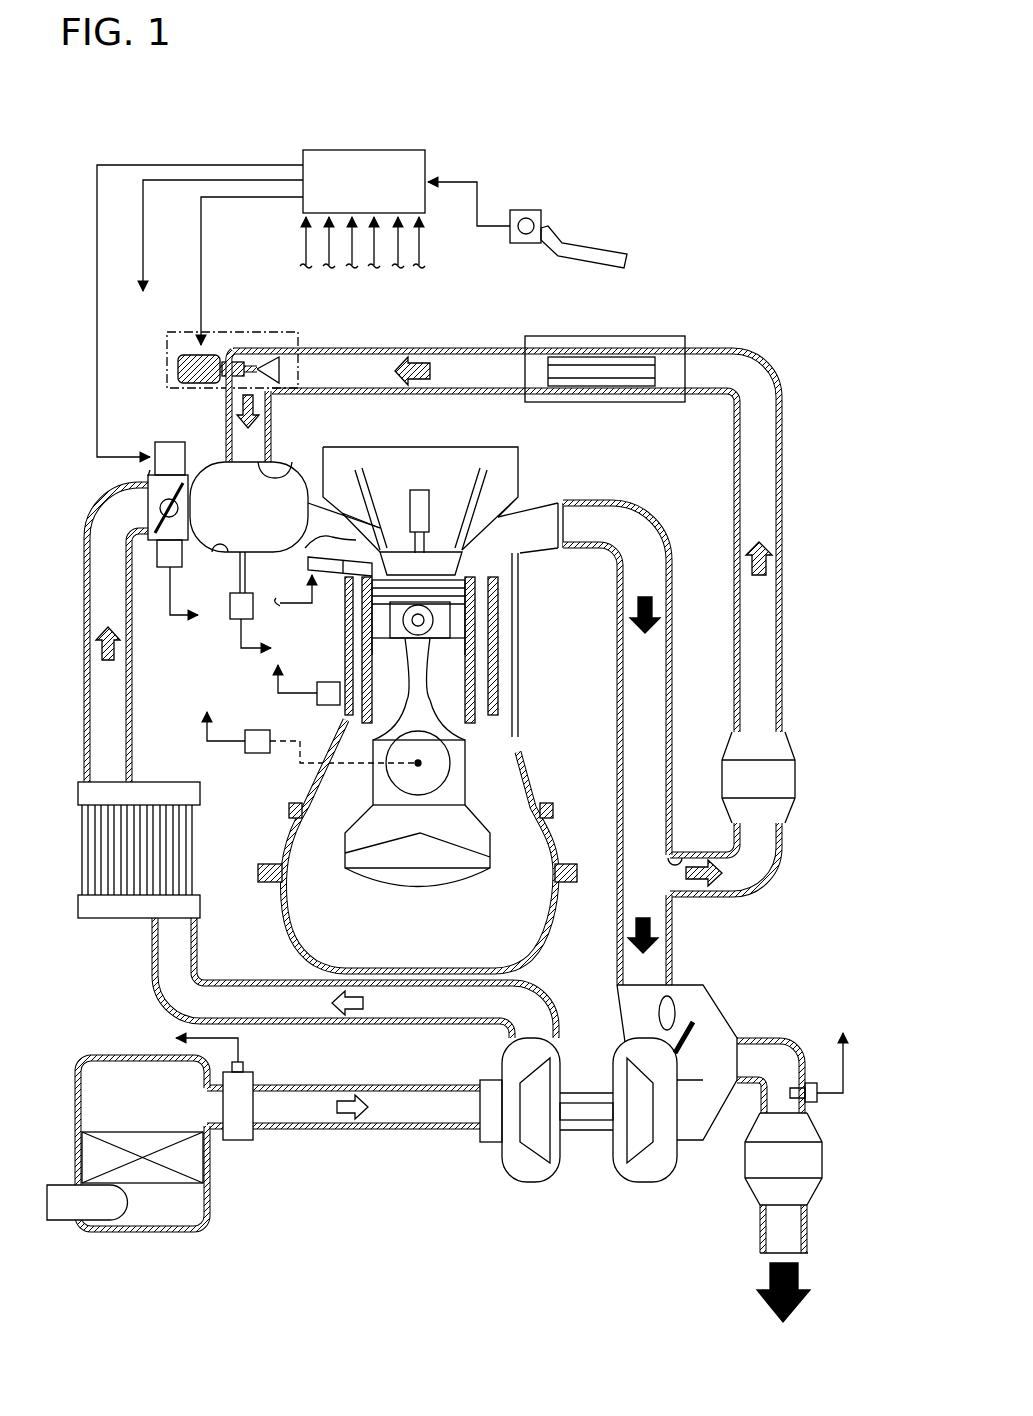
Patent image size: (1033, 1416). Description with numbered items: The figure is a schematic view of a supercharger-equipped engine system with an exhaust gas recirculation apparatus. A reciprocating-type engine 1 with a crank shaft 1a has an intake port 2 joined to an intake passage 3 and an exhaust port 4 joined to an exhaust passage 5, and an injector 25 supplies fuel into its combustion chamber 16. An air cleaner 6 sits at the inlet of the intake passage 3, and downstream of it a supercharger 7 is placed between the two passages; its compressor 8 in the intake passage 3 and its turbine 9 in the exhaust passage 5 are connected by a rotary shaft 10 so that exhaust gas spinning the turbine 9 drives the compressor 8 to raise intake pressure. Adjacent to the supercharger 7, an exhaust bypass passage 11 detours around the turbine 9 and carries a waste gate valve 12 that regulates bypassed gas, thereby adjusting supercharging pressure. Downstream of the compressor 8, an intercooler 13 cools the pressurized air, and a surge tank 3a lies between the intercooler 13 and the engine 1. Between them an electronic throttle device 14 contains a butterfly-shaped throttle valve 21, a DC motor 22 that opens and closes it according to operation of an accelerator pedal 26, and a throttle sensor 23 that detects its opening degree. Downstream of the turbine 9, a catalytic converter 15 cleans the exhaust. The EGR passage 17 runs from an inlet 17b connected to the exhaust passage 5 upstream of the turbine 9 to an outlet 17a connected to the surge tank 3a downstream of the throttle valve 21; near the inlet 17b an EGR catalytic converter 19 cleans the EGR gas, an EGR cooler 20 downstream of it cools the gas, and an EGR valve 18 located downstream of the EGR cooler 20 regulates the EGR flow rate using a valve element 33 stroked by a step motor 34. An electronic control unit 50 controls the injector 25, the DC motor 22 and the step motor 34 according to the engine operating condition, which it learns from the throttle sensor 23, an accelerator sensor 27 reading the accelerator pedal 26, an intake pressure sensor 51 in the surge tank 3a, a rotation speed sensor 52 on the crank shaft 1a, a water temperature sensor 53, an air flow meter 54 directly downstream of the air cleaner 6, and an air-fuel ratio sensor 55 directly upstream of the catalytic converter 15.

The engine 1 is at (522, 452).
The crank shaft 1a is at (445, 763).
The intake port 2 is at (306, 562).
The intake passage 3 is at (85, 692).
The surge tank 3a is at (217, 553).
The exhaust port 4 is at (518, 553).
The exhaust passage 5 is at (615, 712).
The air cleaner 6 is at (185, 1235).
The supercharger 7 is at (640, 1086).
The compressor 8 is at (530, 1140).
The turbine 9 is at (640, 1145).
The rotary shaft 10 is at (590, 1103).
The exhaust bypass passage 11 is at (700, 985).
The waste gate valve 12 is at (695, 1010).
The intercooler 13 is at (200, 822).
The electronic throttle device 14 is at (145, 508).
The catalytic converter 15 is at (812, 1122).
The combustion chamber 16 is at (478, 590).
The EGR passage 17 is at (478, 347).
The outlet of the EGR passage 17a is at (272, 462).
The inlet of the EGR passage 17b is at (688, 850).
The EGR valve 18 is at (240, 330).
The EGR catalytic converter 19 is at (790, 782).
The EGR cooler 20 is at (592, 370).
The throttle valve 21 is at (148, 476).
The DC motor 22 is at (172, 442).
The throttle sensor 23 is at (160, 580).
The injector 25 is at (330, 575).
The accelerator pedal 26 is at (600, 247).
The accelerator sensor 27 is at (525, 210).
The valve element 33 is at (283, 360).
The step motor 34 is at (178, 368).
The electronic control unit 50 is at (368, 150).
The intake pressure sensor 51 is at (230, 614).
The rotation speed sensor 52 is at (252, 733).
The water temperature sensor 53 is at (325, 686).
The air flow meter 54 is at (245, 1132).
The air-fuel ratio sensor 55 is at (808, 1083).